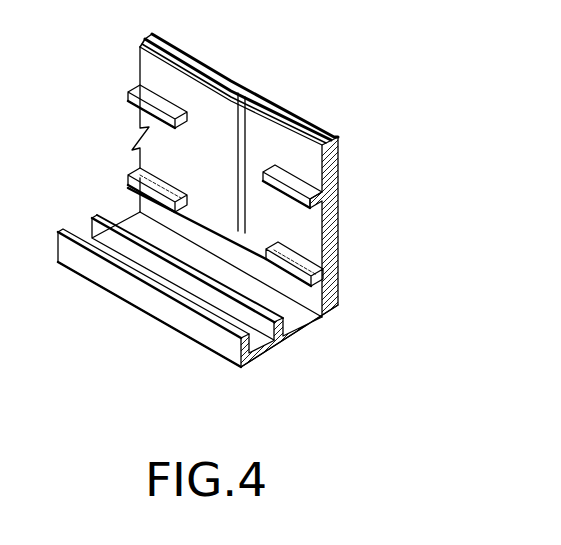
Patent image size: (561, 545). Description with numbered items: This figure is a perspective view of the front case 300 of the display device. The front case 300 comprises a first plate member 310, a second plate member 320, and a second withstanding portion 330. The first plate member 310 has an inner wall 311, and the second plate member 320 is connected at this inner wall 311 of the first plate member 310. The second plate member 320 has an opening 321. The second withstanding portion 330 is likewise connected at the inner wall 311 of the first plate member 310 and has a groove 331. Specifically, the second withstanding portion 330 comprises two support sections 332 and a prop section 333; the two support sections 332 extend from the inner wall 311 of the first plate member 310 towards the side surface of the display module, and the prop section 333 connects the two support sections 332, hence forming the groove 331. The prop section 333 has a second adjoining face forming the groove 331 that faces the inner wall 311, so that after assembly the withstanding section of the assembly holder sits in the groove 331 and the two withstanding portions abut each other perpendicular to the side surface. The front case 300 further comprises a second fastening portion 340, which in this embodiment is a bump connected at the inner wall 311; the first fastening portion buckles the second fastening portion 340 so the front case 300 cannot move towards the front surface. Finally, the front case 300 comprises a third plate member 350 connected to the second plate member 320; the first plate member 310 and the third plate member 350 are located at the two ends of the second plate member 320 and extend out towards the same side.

The front case 300 is at (255, 261).
The first plate member 310 is at (337, 290).
The inner wall 311 is at (128, 188).
The second plate member 320 is at (218, 340).
The opening 321 is at (187, 343).
The second withstanding portion 330 is at (306, 264).
The groove 331 is at (200, 218).
The support sections 332 is at (300, 253).
The prop section 333 is at (256, 253).
The second fastening portion 340 is at (312, 198).
The third plate member 350 is at (163, 313).